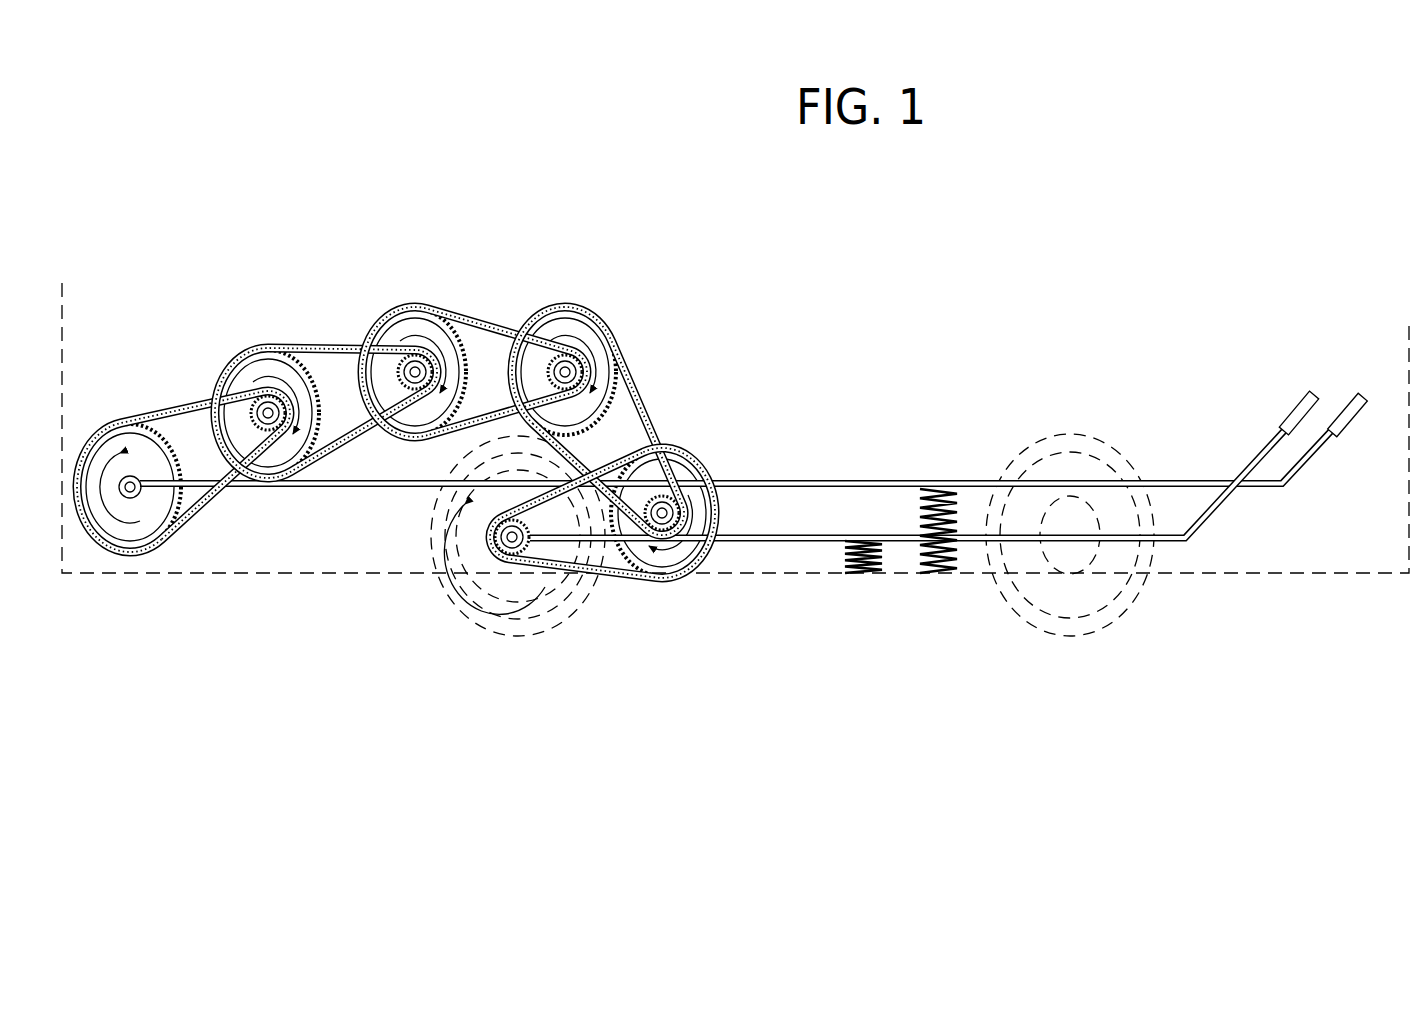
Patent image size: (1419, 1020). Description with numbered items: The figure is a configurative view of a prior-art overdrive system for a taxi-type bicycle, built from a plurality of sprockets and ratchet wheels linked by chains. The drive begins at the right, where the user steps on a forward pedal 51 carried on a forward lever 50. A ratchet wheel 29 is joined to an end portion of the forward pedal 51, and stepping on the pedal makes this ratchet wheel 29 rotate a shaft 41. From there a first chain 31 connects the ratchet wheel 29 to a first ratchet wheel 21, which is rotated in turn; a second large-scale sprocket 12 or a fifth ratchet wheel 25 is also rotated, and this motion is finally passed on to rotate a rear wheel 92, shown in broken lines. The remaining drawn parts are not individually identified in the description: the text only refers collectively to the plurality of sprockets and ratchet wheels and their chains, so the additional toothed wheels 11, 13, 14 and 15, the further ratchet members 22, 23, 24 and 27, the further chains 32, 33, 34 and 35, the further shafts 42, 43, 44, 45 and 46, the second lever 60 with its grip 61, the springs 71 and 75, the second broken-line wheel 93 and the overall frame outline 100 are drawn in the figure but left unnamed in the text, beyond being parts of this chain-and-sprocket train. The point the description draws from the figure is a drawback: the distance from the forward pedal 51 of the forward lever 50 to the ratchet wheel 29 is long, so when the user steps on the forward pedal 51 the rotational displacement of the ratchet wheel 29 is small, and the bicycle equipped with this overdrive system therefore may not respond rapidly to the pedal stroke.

The first gear 11 is at (130, 445).
The second large-scale sprocket 12 is at (255, 372).
The third gear 13 is at (418, 322).
The fourth gear 14 is at (568, 322).
The fifth gear 15 is at (690, 460).
The first ratchet wheel 21 is at (265, 432).
The second sprocket 22 is at (415, 395).
The third sprocket 23 is at (578, 358).
The fourth sprocket 24 is at (672, 530).
The fifth ratchet wheel 25 is at (452, 570).
The drive sprocket 27 is at (505, 548).
The ratchet wheel 29 is at (150, 497).
The first chain 31 is at (163, 412).
The second chain 32 is at (330, 350).
The third chain 33 is at (485, 323).
The fourth chain 34 is at (637, 384).
The fifth chain 35 is at (610, 577).
The shaft 41 is at (122, 470).
The second shaft 42 is at (280, 437).
The third shaft 43 is at (412, 362).
The fourth shaft 44 is at (563, 362).
The fifth shaft 45 is at (660, 500).
The drive shaft 46 is at (522, 550).
The forward lever 50 is at (862, 480).
The forward pedal 51 is at (1341, 384).
The lower operating rod 60 is at (777, 522).
The lower handle grip 61 is at (1290, 410).
The first spring 71 is at (852, 578).
The second spring 75 is at (953, 487).
The rear wheel 92 is at (503, 633).
The support wheel (phantom) 93 is at (1053, 637).
The main body 100 is at (1238, 578).